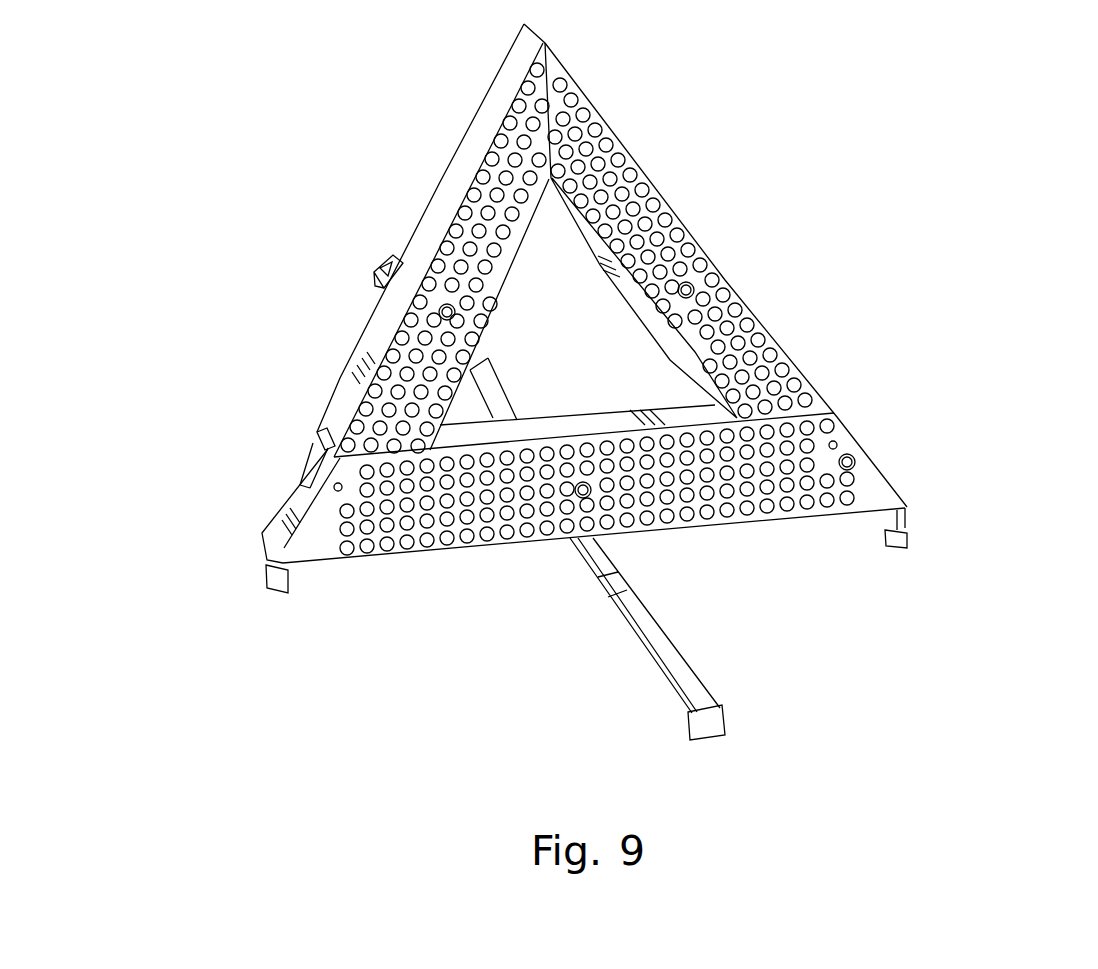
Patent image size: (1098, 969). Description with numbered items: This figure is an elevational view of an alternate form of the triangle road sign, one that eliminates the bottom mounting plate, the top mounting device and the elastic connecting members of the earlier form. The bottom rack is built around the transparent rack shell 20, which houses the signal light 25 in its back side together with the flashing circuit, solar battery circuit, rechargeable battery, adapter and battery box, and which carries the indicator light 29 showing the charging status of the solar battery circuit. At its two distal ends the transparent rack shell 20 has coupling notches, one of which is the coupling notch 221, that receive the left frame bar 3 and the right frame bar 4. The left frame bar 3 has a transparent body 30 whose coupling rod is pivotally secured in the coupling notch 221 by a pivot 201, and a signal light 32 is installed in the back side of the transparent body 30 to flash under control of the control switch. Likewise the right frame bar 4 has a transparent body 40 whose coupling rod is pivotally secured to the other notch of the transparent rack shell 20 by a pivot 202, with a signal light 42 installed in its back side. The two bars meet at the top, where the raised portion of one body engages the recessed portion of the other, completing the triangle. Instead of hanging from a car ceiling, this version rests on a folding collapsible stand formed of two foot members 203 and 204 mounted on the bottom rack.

The left frame bar 3 is at (466, 85).
The transparent body 30 is at (460, 171).
The signal light 32 is at (440, 312).
The right frame bar 4 is at (705, 205).
The transparent body 40 is at (702, 250).
The signal light 42 is at (694, 289).
The transparent rack shell 20 is at (542, 432).
The signal light 25 is at (578, 498).
The indicator light 29 is at (856, 462).
The pivot 201 is at (334, 490).
The pivot 202 is at (838, 442).
The foot member 203 is at (672, 642).
The foot member 204 is at (907, 522).
The coupling notch 221 is at (318, 452).